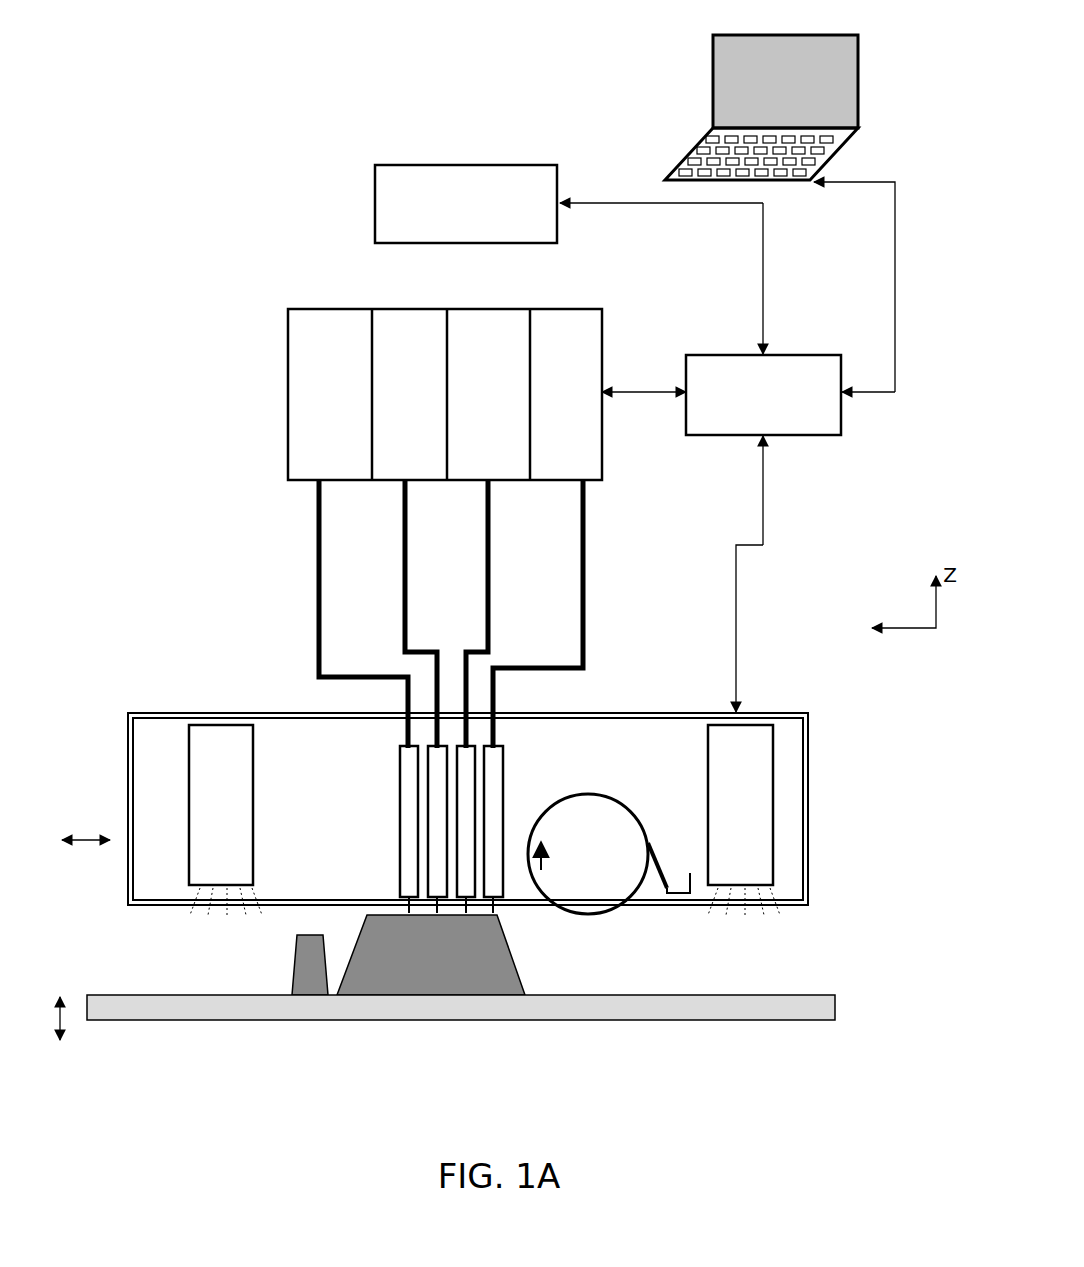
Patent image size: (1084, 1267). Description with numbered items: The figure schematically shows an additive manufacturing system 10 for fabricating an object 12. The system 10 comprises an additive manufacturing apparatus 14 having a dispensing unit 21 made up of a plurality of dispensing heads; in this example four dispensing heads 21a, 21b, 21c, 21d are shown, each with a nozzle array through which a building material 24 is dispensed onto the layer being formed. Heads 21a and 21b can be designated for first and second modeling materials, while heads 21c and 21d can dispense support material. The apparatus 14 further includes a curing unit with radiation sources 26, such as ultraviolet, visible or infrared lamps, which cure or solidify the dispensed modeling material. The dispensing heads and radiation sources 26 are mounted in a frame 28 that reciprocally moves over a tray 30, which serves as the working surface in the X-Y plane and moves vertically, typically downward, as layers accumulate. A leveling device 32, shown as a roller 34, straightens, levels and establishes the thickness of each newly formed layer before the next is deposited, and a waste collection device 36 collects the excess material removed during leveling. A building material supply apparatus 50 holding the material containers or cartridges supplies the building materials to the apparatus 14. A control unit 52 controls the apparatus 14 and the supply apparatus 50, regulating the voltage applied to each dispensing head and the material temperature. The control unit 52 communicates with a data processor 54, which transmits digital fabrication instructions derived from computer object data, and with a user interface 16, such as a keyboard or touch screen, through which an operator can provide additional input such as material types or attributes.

The system 10 is at (287, 46).
The data processor 54 is at (700, 150).
The user interface 16 is at (466, 204).
The building material supply apparatus 50 is at (260, 330).
The control unit 52 is at (727, 447).
The additive manufacturing apparatus 14 is at (108, 624).
The frame 28 is at (757, 712).
The radiation source 26 is at (758, 840).
The dispensing unit 21 is at (408, 785).
The dispensing head 21a is at (496, 822).
The dispensing head 21b is at (468, 772).
The dispensing head 21c is at (437, 835).
The dispensing head 21d is at (409, 860).
The building material 24 is at (505, 915).
The leveling device 32 is at (624, 789).
The roller 34 is at (588, 854).
The waste collection device 36 is at (667, 895).
The object 12 is at (395, 985).
The tray 30 is at (178, 1005).